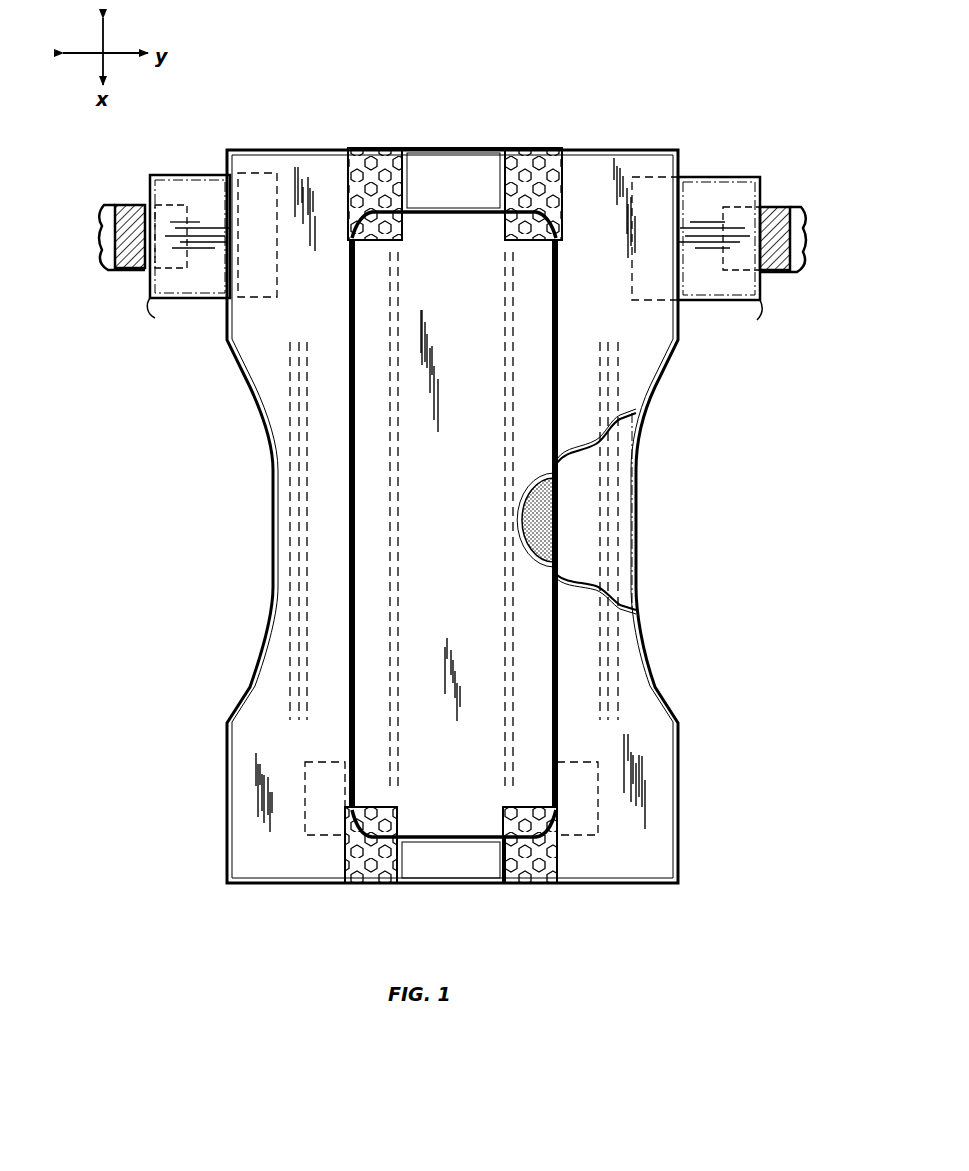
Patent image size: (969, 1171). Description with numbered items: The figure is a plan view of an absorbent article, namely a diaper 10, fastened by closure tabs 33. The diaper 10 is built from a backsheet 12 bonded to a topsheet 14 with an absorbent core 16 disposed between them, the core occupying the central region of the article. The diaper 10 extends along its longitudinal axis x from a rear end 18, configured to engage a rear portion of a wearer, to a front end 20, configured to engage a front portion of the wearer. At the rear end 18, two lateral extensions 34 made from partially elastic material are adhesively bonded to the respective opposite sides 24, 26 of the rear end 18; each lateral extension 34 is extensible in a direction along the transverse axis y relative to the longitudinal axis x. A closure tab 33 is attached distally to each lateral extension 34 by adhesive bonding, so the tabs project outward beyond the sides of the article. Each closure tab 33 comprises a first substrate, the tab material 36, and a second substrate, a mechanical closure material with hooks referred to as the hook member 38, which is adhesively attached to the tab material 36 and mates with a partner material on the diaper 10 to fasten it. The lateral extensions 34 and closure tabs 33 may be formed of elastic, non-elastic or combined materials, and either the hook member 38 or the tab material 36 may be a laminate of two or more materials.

The diaper 10 is at (714, 112).
The backsheet 12 is at (634, 392).
The topsheet 14 is at (628, 450).
The absorbent core 16 is at (560, 512).
The rear end 18 is at (460, 146).
The front end 20 is at (452, 886).
The side of rear end 24 is at (245, 162).
The side of rear end 26 is at (664, 162).
The closure tab 33 is at (770, 325).
The lateral extension 34 is at (175, 185).
The tab material 36 is at (162, 207).
The hook member 38 is at (113, 207).